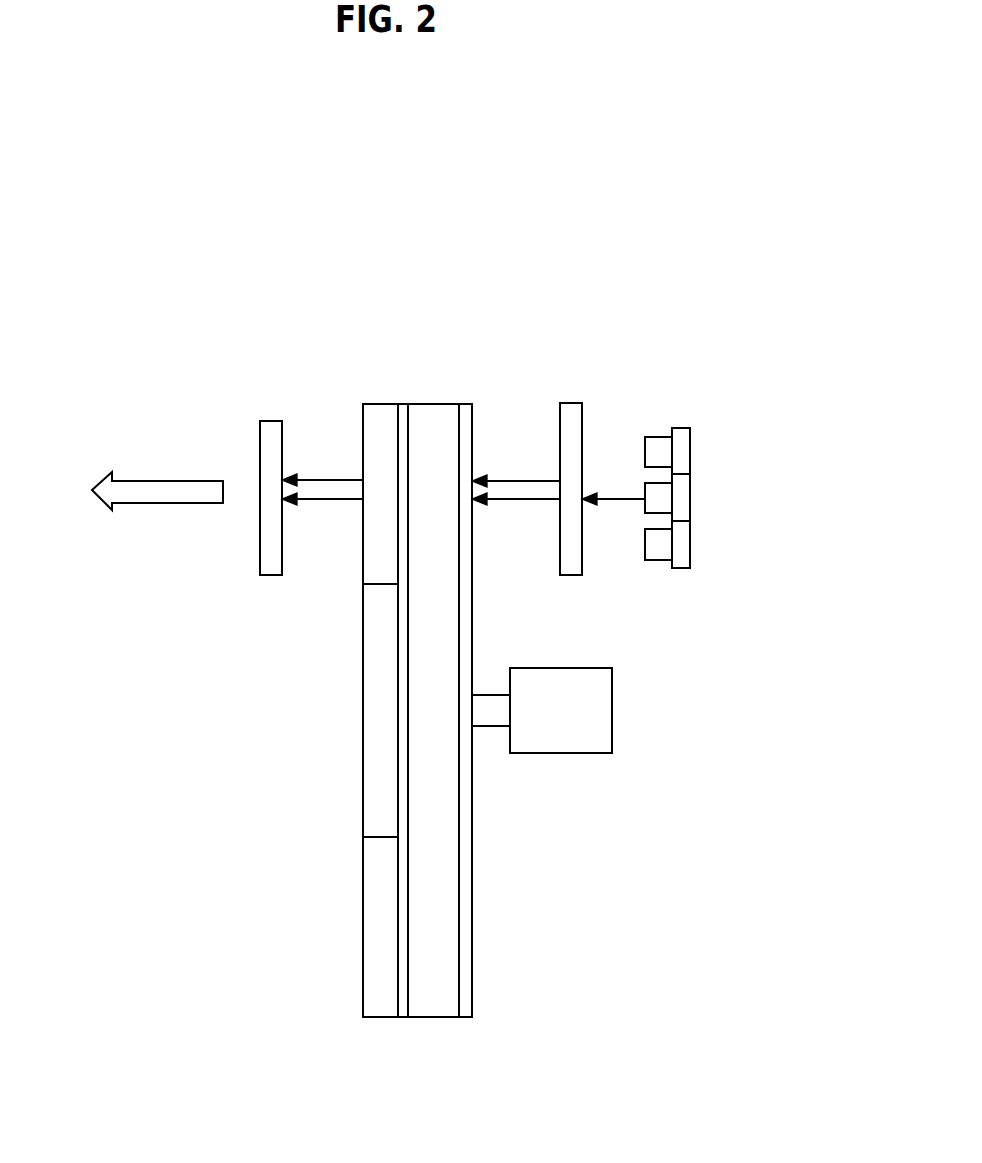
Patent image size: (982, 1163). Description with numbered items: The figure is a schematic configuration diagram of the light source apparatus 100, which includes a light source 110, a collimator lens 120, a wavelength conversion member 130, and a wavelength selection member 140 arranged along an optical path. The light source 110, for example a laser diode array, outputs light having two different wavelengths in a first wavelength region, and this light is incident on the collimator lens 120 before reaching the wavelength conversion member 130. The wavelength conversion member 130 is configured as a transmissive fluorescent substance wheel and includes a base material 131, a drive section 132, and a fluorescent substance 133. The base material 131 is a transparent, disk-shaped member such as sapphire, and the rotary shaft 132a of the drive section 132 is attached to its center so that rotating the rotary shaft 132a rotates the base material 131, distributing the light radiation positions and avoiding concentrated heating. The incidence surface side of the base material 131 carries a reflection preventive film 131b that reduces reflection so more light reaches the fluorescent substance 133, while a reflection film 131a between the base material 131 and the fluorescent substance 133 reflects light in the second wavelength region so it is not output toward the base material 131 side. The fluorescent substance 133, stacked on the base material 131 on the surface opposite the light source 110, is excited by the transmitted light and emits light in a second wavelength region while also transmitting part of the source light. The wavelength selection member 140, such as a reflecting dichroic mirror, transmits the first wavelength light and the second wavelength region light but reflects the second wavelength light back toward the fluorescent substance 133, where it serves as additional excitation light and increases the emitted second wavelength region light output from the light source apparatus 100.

The light source apparatus 100 is at (597, 242).
The light source 110 is at (668, 408).
The collimator lens 120 is at (572, 403).
The wavelength conversion member 130 is at (430, 388).
The base material 131 is at (438, 1008).
The reflection film 131a is at (402, 1008).
The reflection preventive film 131b is at (463, 1008).
The drive section 132 is at (588, 753).
The rotary shaft 132a is at (493, 727).
The fluorescent substance 133 is at (375, 1008).
The wavelength selection member 140 is at (277, 421).